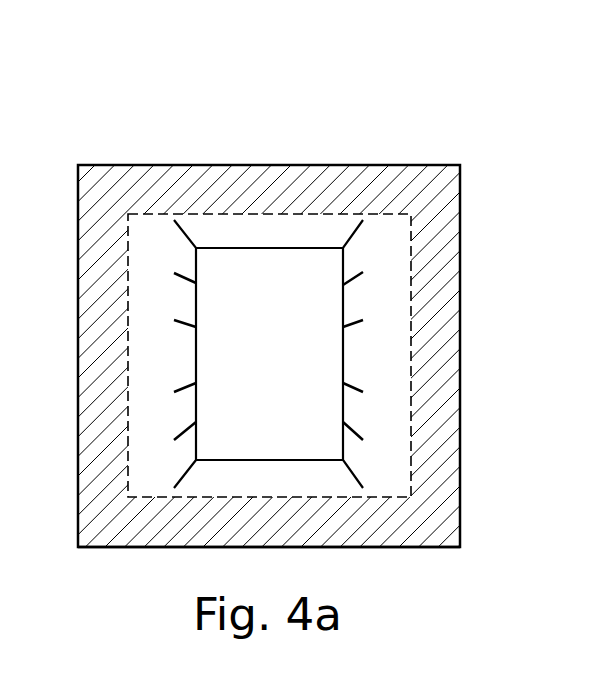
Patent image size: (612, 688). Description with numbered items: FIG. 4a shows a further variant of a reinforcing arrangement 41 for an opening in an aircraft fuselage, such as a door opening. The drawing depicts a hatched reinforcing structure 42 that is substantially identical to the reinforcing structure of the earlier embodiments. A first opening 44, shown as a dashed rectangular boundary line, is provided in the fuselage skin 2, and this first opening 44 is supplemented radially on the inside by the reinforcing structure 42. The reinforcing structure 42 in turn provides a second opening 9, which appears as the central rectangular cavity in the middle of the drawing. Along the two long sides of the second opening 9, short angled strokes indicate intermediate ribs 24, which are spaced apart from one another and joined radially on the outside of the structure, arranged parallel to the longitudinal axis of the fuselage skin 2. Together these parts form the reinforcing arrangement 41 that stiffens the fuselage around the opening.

The fuselage skin 2 is at (95, 532).
The second opening 9 is at (268, 354).
The intermediate ribs 24 is at (345, 287).
The reinforcing arrangement 41 is at (287, 135).
The reinforcing structure 42 is at (133, 193).
The first opening 44 is at (311, 213).